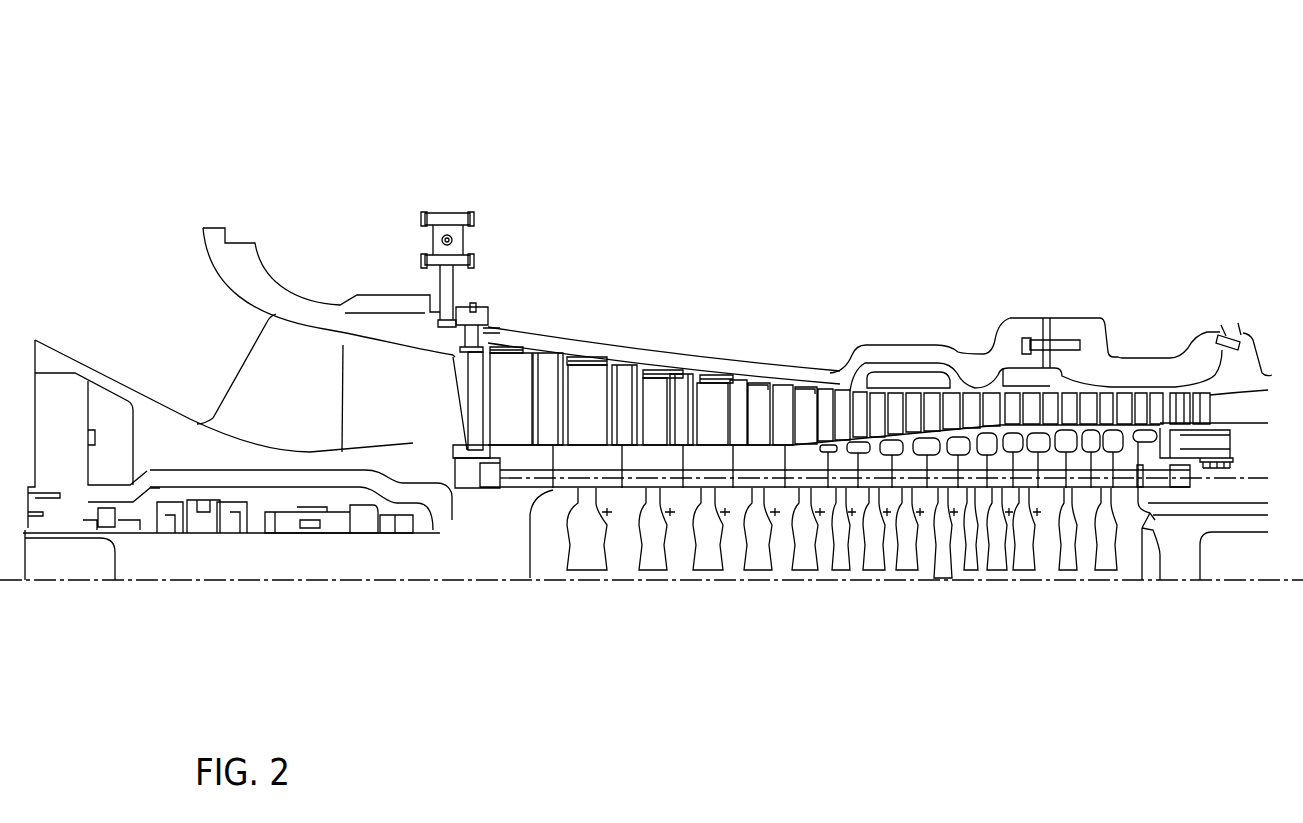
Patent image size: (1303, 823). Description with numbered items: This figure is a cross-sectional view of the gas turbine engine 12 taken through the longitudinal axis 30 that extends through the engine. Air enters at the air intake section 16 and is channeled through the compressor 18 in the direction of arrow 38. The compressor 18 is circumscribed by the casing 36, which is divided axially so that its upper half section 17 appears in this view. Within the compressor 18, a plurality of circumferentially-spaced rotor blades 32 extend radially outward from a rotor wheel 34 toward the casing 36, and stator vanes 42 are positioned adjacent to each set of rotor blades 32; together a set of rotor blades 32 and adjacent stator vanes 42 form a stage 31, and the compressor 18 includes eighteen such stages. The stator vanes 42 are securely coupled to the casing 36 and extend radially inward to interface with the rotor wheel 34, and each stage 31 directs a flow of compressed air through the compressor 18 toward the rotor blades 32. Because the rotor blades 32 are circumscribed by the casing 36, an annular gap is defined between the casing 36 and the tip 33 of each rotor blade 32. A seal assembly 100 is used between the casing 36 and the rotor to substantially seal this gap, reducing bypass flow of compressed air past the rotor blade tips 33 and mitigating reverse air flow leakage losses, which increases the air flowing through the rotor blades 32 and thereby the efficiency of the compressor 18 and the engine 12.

The gas turbine engine 12 is at (192, 112).
The air intake section 16 is at (152, 308).
The upper half section 17 is at (927, 350).
The compressor 18 is at (865, 695).
The longitudinal axis 30 is at (1222, 585).
The stage 31 is at (603, 697).
The rotor blades 32 is at (522, 413).
The tip 33 is at (523, 363).
The rotor wheel 34 is at (705, 613).
The casing 36 is at (857, 350).
The arrow 38 is at (437, 397).
The stator vanes 42 is at (562, 399).
The seal assembly 100 is at (515, 363).